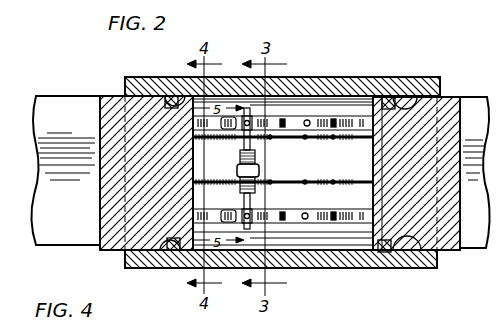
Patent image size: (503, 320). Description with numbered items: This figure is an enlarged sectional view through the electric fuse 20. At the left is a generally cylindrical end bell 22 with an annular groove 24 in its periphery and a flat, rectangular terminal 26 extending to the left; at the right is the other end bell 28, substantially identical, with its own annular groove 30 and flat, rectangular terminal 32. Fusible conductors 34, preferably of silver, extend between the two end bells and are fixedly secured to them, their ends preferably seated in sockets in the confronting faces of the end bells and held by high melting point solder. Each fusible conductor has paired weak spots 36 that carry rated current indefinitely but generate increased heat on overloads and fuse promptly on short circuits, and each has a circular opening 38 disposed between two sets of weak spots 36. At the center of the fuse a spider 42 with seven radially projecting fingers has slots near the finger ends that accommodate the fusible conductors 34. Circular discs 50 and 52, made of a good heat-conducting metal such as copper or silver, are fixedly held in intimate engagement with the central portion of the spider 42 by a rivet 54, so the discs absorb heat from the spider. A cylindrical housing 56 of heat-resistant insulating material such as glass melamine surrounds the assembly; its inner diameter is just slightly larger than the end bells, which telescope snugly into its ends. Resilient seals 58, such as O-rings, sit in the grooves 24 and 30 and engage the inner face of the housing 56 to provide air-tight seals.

The electric fuse 20 is at (486, 54).
The end bell 22 is at (141, 77).
The annular groove 24 is at (165, 80).
The terminal 26 is at (58, 100).
The end bell 28 is at (434, 268).
The annular groove 30 is at (414, 96).
The terminal 32 is at (469, 251).
The fusible conductors 34 is at (345, 210).
The weak spots 36 is at (291, 128).
The circular opening 38 is at (309, 120).
The spider 42 is at (243, 201).
The circular disc 50 is at (243, 157).
The circular disc 52 is at (262, 158).
The rivet 54 is at (260, 175).
The cylindrical housing 56 is at (442, 86).
The resilient seals 58 is at (389, 97).